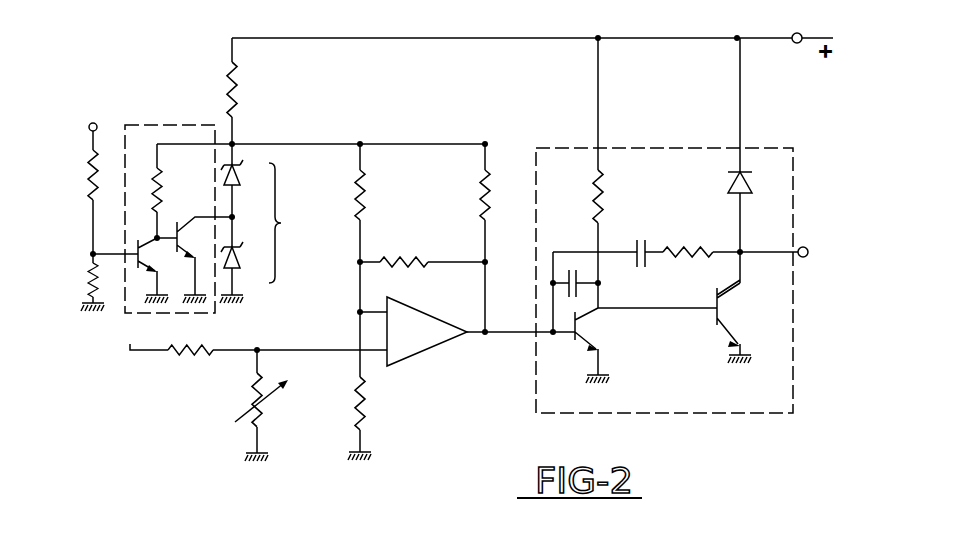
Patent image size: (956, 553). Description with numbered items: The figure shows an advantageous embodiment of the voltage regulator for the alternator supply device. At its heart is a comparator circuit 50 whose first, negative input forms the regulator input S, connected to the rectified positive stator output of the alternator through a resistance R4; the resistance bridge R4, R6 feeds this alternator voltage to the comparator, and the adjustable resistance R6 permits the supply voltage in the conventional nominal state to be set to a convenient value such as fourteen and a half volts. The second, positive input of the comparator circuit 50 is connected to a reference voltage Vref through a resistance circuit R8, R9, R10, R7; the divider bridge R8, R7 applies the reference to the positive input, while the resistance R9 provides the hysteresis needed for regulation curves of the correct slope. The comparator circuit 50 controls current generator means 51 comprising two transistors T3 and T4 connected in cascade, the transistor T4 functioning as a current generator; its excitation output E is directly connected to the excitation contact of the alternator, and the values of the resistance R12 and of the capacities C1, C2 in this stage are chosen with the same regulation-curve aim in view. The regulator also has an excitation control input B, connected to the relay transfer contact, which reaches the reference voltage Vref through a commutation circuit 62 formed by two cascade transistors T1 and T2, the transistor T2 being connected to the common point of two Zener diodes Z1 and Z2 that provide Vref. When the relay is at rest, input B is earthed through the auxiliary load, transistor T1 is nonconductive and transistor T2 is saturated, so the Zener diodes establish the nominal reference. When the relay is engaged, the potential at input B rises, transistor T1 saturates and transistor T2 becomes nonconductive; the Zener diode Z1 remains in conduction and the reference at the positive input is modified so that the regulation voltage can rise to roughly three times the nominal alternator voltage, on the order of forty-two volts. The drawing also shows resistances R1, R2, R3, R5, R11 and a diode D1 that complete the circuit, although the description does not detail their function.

The resistor R1 is at (82, 202).
The resistor R2 is at (85, 282).
The resistor R3 is at (144, 191).
The resistance R4 is at (277, 367).
The resistor R5 is at (250, 91).
The resistance R6 is at (268, 405).
The resistance R7 is at (375, 418).
The resistance R8 is at (377, 203).
The resistance R9 is at (422, 244).
The resistance R10 is at (507, 238).
The resistor R11 is at (621, 173).
The resistance R12 is at (701, 241).
The transistor T1 is at (150, 260).
The transistor T2 is at (188, 235).
The transistor T3 is at (590, 332).
The transistor T4 is at (733, 311).
The Zener diode Z1 is at (245, 260).
The Zener diode Z2 is at (246, 180).
The capacity C1 is at (575, 278).
The capacity C2 is at (631, 252).
The diode D1 is at (755, 145).
The comparator circuit 50 is at (426, 340).
The current generator means 51 is at (765, 148).
The commutation circuit 62 is at (145, 125).
The excitation control input B is at (93, 123).
The input S is at (146, 337).
The excitation output E is at (800, 262).
The reference voltage Vref is at (295, 223).